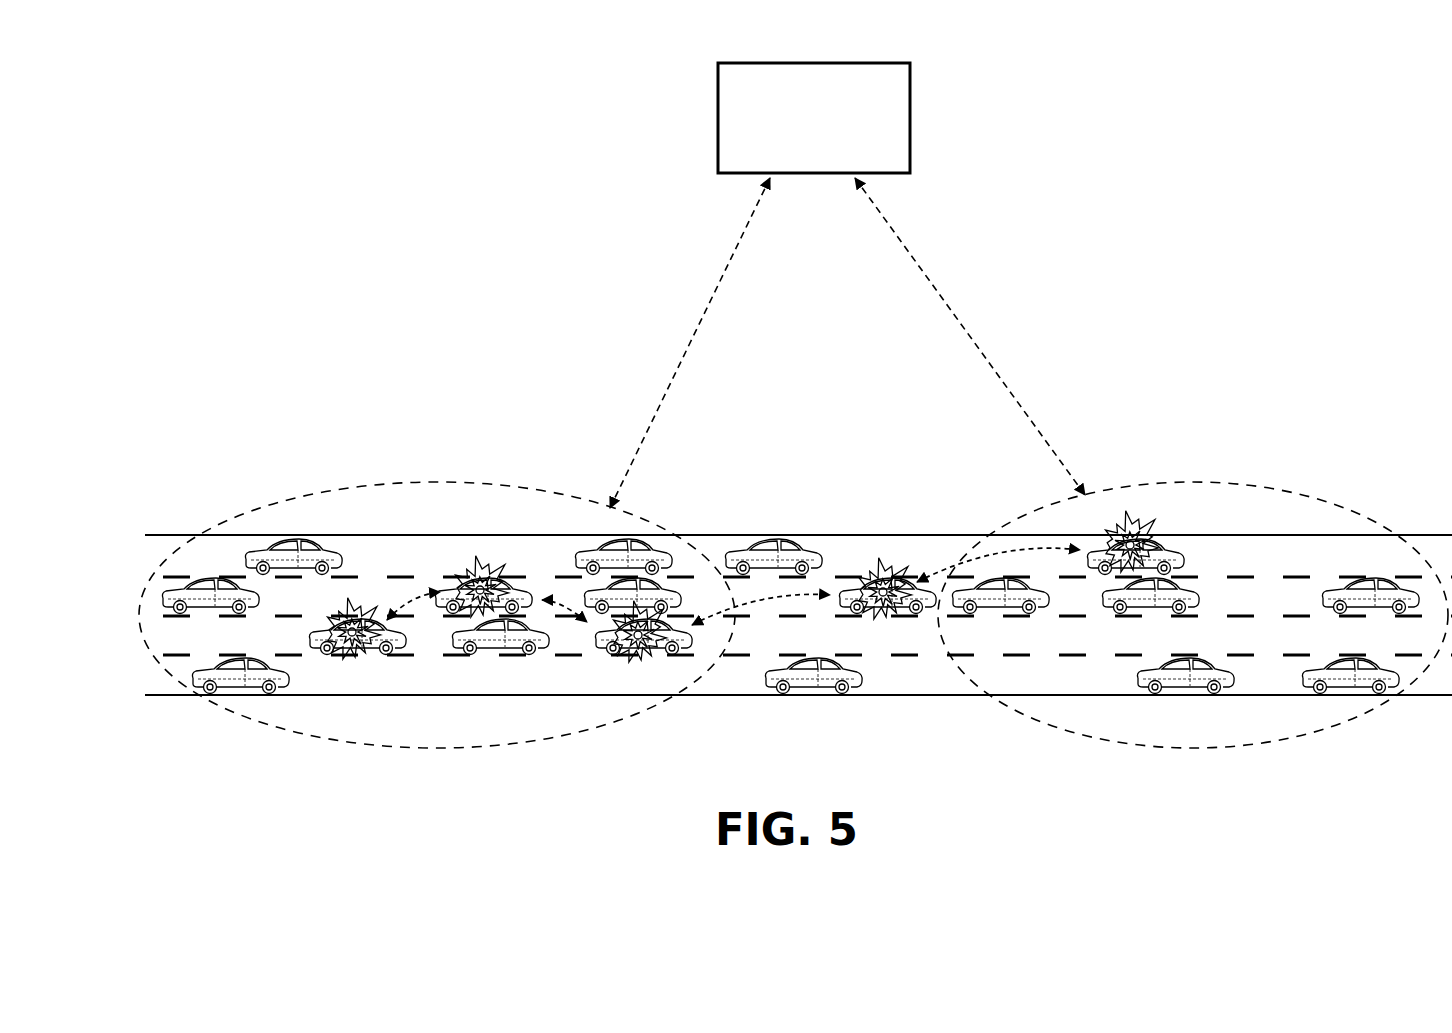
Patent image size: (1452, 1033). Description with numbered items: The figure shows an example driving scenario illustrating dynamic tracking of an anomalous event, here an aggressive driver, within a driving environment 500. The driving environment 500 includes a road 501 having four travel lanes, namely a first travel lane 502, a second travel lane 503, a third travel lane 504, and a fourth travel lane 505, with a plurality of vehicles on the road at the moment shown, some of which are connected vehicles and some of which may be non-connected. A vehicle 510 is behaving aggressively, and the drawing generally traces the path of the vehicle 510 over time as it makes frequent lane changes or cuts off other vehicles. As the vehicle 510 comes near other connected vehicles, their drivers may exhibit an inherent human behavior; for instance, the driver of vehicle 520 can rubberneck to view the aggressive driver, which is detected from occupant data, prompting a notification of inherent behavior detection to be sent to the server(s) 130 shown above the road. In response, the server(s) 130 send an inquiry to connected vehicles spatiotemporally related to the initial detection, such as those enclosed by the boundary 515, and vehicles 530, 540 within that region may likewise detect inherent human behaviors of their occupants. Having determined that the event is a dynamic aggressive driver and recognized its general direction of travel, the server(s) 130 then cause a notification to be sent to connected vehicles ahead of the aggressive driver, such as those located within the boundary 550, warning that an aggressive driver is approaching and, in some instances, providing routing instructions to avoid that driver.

The server(s) 130 is at (910, 118).
The driving environment 500 is at (1311, 78).
The road 501 is at (140, 512).
The first travel lane 502 is at (160, 555).
The second travel lane 503 is at (155, 592).
The third travel lane 504 is at (160, 635).
The fourth travel lane 505 is at (160, 678).
The vehicle 510 is at (377, 656).
The boundary 515 is at (385, 485).
The vehicle 520 is at (227, 690).
The vehicle 530 is at (608, 537).
The vehicle 540 is at (672, 592).
The boundary 550 is at (1253, 487).